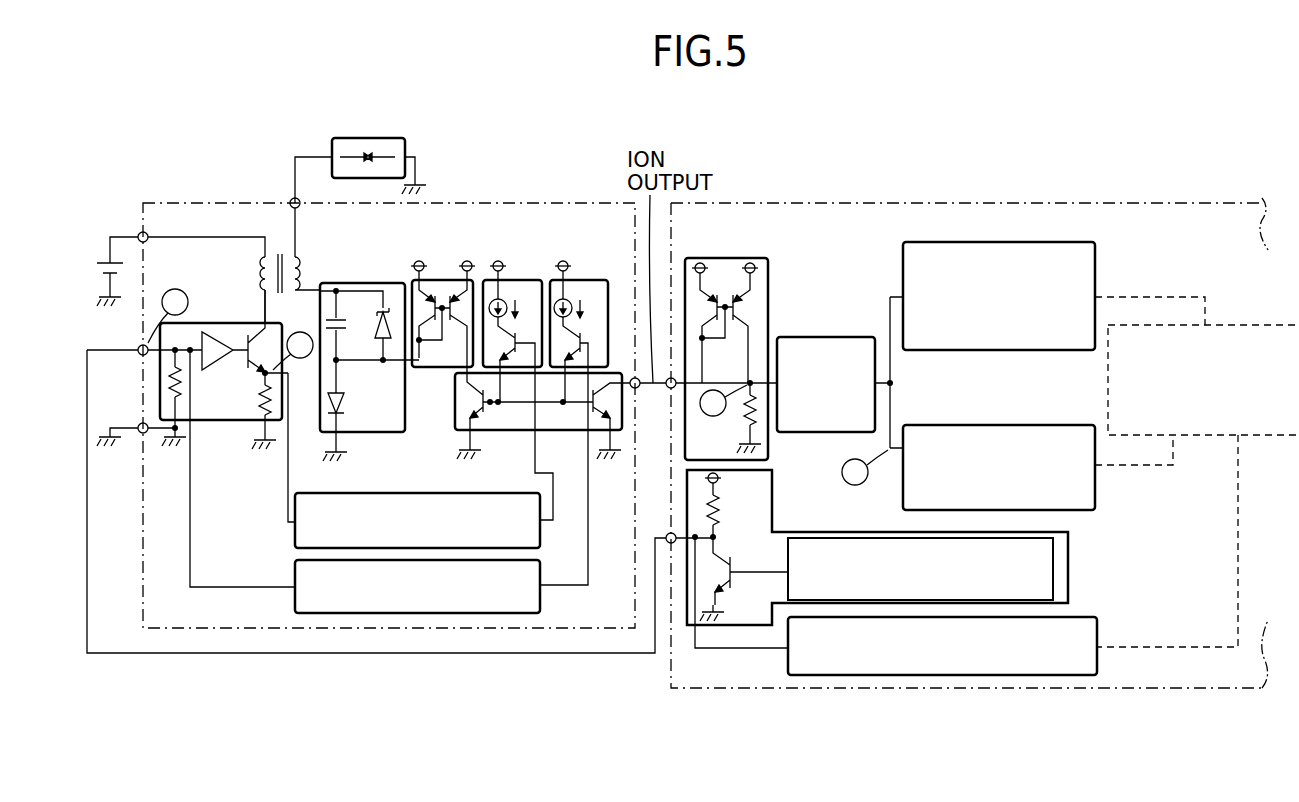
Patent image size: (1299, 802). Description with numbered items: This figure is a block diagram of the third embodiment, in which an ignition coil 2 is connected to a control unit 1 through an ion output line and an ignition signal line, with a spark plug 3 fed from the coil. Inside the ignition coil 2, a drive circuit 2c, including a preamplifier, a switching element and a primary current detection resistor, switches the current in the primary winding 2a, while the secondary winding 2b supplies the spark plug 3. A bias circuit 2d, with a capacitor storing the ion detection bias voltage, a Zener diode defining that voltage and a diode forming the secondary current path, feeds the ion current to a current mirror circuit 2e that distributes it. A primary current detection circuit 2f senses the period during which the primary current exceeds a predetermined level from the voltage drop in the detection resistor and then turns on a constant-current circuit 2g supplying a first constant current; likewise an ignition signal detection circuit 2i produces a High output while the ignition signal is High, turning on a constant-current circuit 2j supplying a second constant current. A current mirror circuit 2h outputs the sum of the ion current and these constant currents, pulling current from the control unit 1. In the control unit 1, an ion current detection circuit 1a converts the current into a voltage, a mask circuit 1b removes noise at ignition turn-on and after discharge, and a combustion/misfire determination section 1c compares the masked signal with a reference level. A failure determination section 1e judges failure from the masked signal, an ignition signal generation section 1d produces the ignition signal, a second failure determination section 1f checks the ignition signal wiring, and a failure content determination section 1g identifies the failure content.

The control unit 1 is at (1070, 203).
The ion current detection circuit 1a is at (727, 258).
The mask circuit 1b is at (803, 337).
The combustion/misfire determination section 1c is at (924, 242).
The ignition signal generation section 1d is at (1068, 550).
The failure determination section 1e is at (924, 425).
The failure determination section 1f is at (1098, 630).
The failure content determination section 1g is at (1251, 325).
The ignition coil 2 is at (522, 203).
The primary winding 2a is at (240, 276).
The secondary winding 2b is at (302, 265).
The drive circuit 2c is at (228, 420).
The bias circuit 2d is at (390, 432).
The current mirror circuit 2e is at (441, 280).
The primary current detection circuit 2f is at (540, 534).
The constant-current circuit 2g is at (533, 280).
The current mirror circuit 2h is at (512, 430).
The ignition signal detection circuit 2i is at (540, 604).
The constant-current circuit 2j is at (595, 280).
The spark plug 3 is at (376, 138).